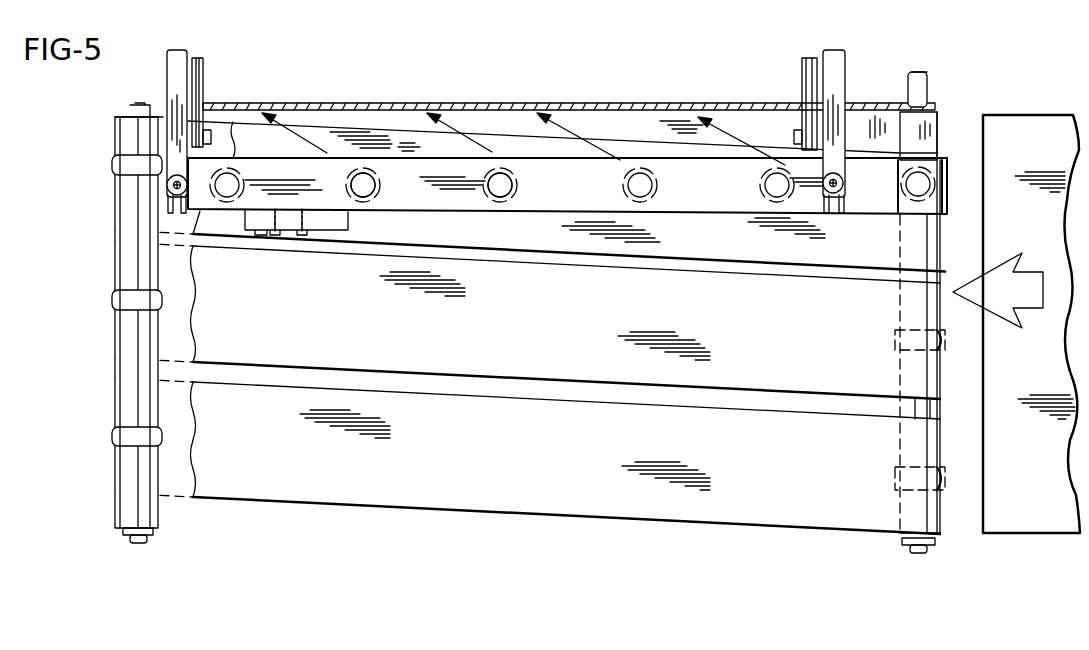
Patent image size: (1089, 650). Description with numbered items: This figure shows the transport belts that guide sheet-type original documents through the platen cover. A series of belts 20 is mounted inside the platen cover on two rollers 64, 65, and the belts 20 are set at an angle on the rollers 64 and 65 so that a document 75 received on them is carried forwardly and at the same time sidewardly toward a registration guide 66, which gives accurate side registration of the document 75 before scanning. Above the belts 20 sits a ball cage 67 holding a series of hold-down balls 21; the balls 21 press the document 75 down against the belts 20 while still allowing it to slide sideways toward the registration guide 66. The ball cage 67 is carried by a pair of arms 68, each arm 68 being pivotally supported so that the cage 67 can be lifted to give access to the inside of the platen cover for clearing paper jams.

The belts 20 is at (540, 334).
The hold-down balls 21 is at (494, 177).
The roller 64 is at (128, 507).
The roller 65 is at (903, 545).
The registration guide 66 is at (680, 103).
The ball cage 67 is at (547, 205).
The arms 68 is at (172, 74).
The document 75 is at (1042, 528).